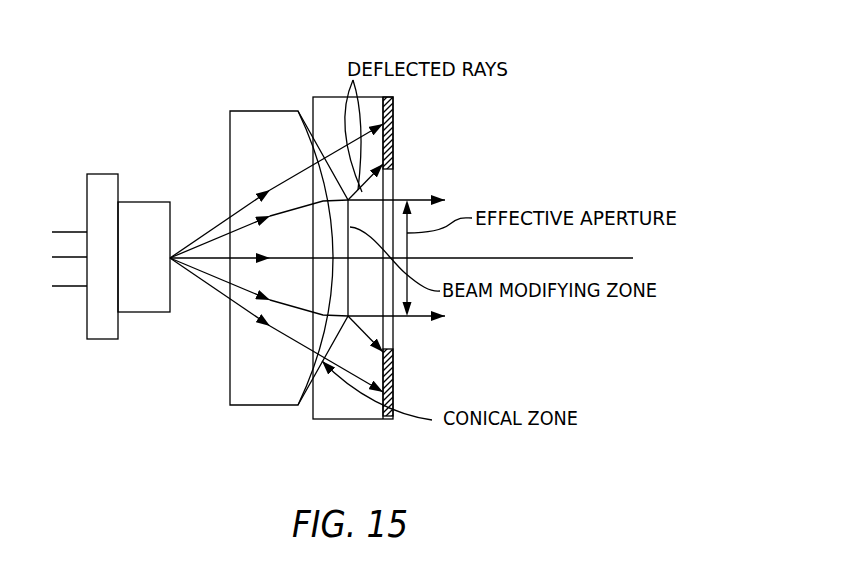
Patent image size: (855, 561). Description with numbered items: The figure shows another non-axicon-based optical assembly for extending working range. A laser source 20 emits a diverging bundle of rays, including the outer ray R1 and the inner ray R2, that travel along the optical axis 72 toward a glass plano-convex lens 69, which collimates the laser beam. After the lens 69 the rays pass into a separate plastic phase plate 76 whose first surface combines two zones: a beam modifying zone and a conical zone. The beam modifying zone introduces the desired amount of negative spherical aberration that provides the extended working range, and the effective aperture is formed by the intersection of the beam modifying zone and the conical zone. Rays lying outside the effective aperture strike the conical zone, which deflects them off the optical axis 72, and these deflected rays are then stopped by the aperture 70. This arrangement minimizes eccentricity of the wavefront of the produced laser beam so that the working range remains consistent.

The light source / detector 20 is at (150, 300).
The plano-convex lens 69 is at (238, 393).
The phase plate 76 is at (347, 408).
The aperture 70 is at (386, 420).
The optical axis 72 is at (618, 258).
The outer ray R1 is at (207, 228).
The inner ray R2 is at (303, 208).